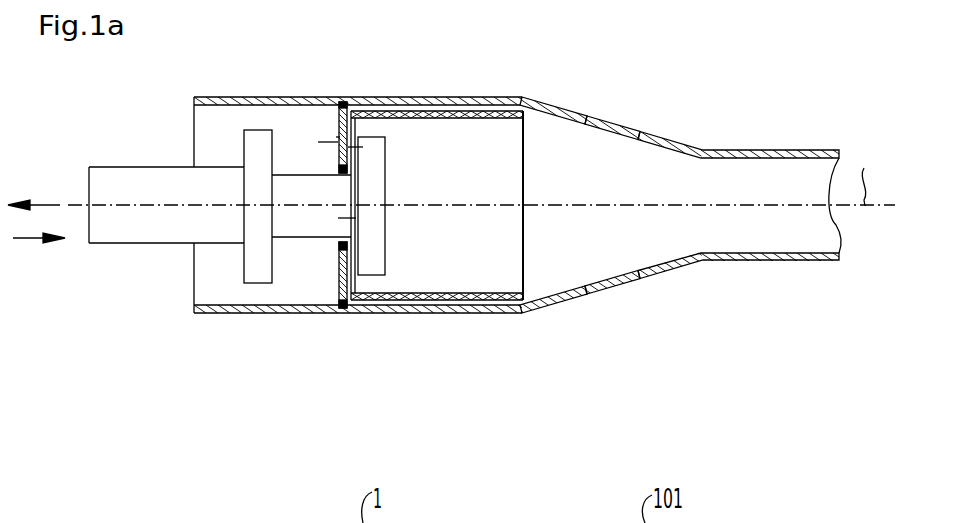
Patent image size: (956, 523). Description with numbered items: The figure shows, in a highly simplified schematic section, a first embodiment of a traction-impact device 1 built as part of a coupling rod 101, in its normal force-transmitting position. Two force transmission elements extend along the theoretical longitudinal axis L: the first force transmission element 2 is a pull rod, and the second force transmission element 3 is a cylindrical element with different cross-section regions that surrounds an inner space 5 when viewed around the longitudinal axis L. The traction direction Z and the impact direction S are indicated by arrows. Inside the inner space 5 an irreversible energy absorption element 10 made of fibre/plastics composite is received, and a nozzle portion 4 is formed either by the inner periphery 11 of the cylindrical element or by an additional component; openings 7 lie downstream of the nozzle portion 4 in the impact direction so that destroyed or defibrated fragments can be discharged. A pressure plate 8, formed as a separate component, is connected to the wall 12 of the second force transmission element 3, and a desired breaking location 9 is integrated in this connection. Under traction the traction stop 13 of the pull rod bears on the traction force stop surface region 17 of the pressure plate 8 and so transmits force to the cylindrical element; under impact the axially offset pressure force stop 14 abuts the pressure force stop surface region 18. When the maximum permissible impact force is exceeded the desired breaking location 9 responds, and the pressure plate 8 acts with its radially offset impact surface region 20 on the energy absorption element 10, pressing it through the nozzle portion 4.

The traction-impact device 1 is at (446, 72).
The coupling rod 101 is at (631, 182).
The first force transmission element 2 is at (130, 178).
The second force transmission element 3 is at (764, 132).
The nozzle portion 4 is at (581, 315).
The inner space 5 is at (560, 120).
The openings 7 is at (622, 131).
The pressure plate 8 is at (340, 137).
The desired breaking location 9 is at (355, 146).
The energy absorption element 10 is at (437, 300).
The inner periphery 11 is at (666, 268).
The wall 12 is at (772, 261).
The traction stop 13 is at (355, 218).
The pressure force stop 14 is at (338, 262).
The traction force stop surface region 17 is at (370, 137).
The pressure force stop surface region 18 is at (328, 142).
The impact surface region 20 is at (360, 292).
The longitudinal axis L is at (867, 173).
The traction direction Z is at (34, 191).
The impact direction S is at (41, 251).